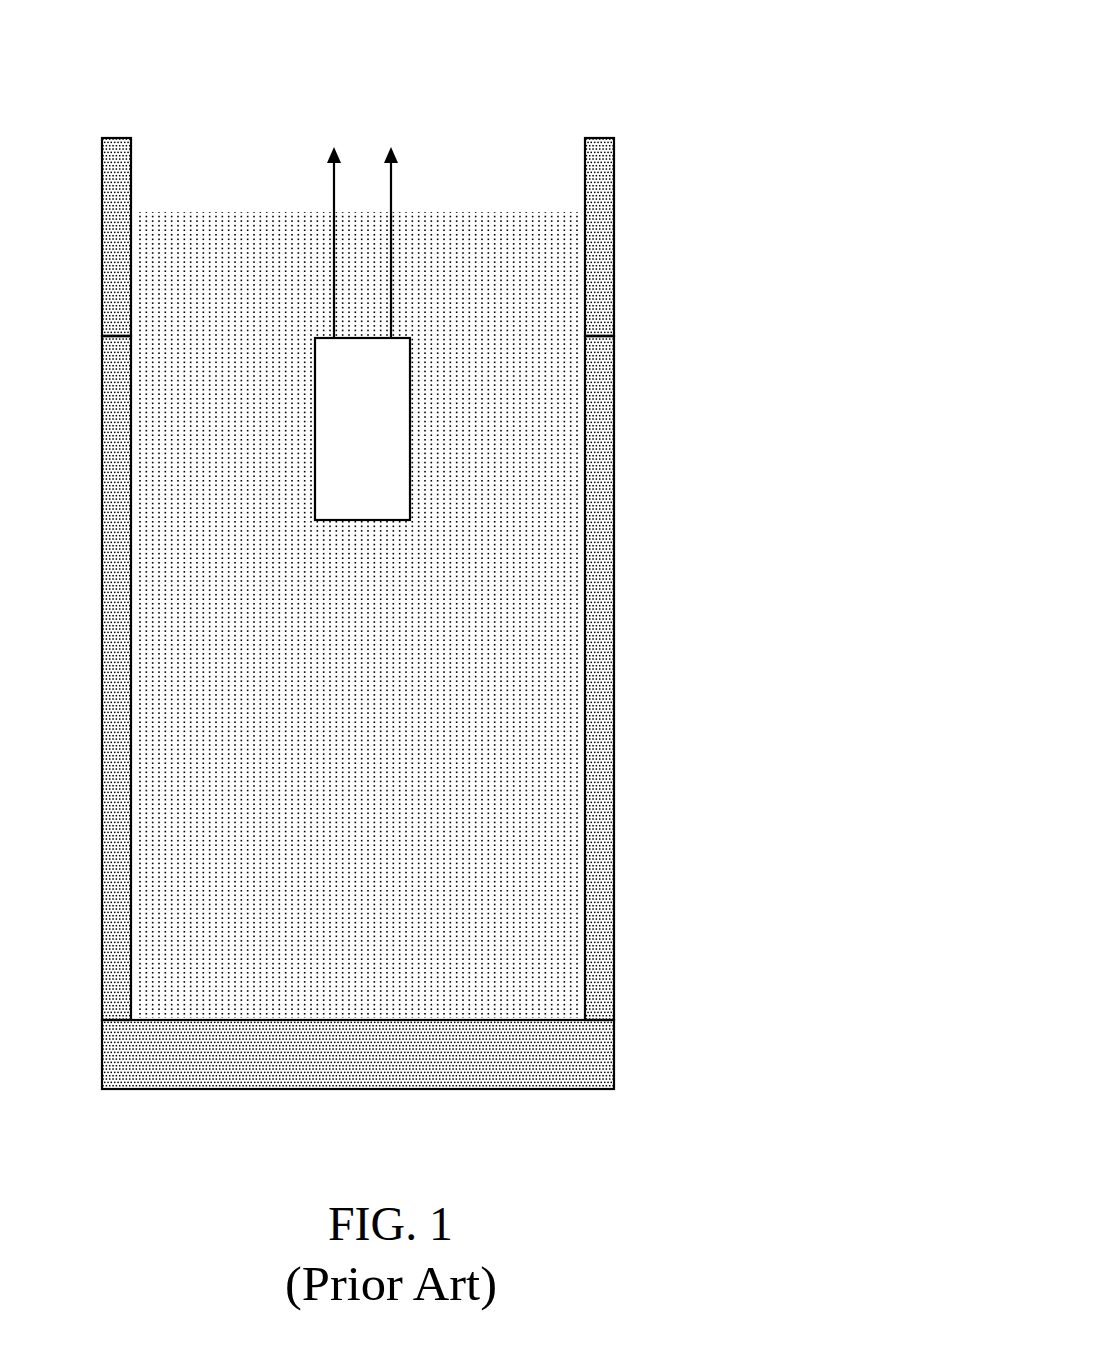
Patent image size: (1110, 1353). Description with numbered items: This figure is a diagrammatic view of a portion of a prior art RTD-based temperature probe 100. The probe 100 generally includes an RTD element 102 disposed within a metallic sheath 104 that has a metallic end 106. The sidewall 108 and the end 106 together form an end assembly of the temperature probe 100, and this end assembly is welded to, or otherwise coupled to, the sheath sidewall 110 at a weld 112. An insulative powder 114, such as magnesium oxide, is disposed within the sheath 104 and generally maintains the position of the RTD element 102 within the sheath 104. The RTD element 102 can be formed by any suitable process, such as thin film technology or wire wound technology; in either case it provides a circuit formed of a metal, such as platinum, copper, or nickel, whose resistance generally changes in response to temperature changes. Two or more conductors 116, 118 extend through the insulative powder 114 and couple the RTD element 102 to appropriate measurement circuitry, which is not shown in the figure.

The temperature probe 100 is at (660, 60).
The RTD element 102 is at (378, 441).
The metallic sheath 104 is at (614, 638).
The metallic end 106 is at (492, 1090).
The sidewall 108 is at (614, 713).
The sheath sidewall 110 is at (614, 237).
The weld 112 is at (614, 334).
The insulative powder 114 is at (552, 535).
The conductor 116 is at (391, 200).
The conductor 118 is at (334, 197).